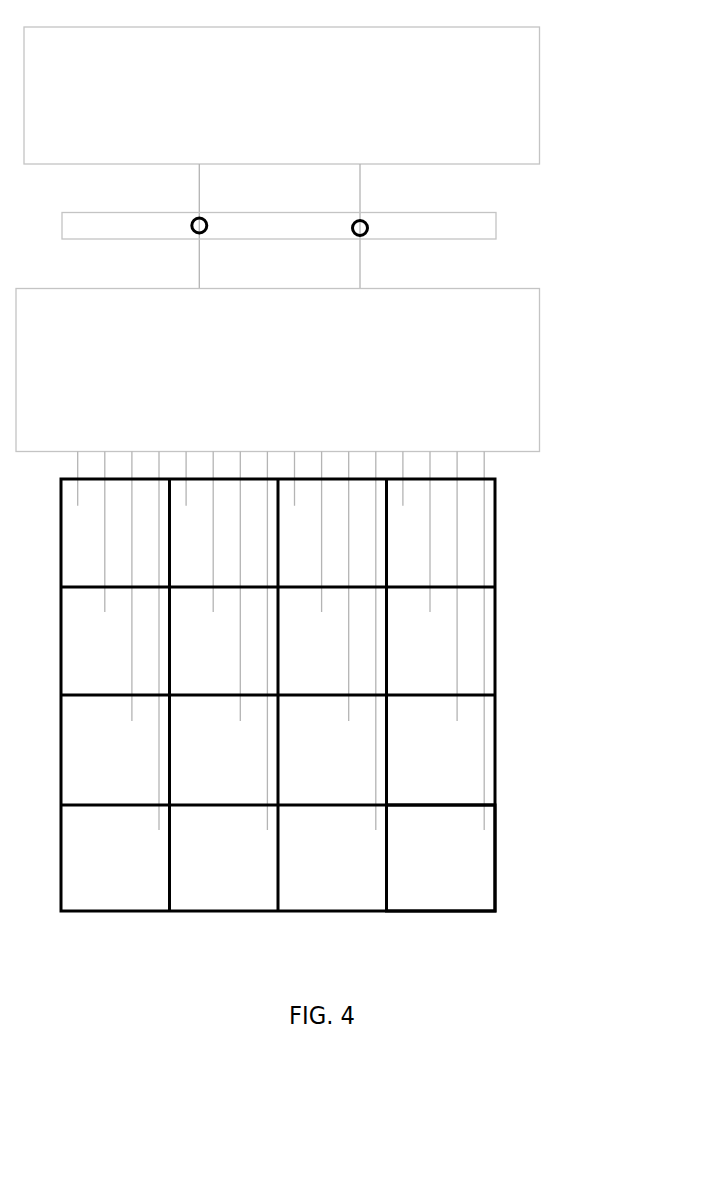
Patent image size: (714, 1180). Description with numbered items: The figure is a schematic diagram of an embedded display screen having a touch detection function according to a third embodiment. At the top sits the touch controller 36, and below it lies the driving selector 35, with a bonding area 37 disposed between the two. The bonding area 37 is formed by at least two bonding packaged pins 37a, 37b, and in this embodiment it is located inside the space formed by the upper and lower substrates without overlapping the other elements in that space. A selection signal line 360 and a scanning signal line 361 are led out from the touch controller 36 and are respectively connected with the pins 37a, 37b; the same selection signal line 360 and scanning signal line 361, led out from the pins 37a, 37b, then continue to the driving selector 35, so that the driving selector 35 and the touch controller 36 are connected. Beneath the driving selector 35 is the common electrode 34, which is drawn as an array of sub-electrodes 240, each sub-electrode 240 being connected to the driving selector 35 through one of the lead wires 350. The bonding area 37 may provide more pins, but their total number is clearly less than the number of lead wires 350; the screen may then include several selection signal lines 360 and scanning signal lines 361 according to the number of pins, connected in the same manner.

The touch controller 36 is at (540, 105).
The bonding area 37 is at (496, 228).
The bonding packaged pin 37a is at (195, 217).
The bonding packaged pin 37b is at (365, 222).
The selection signal line 360 is at (199, 270).
The scanning signal line 361 is at (360, 275).
The driving selector 35 is at (540, 355).
The common electrode 34 is at (496, 512).
The lead wires 350 is at (483, 653).
The sub-electrode 240 is at (473, 887).